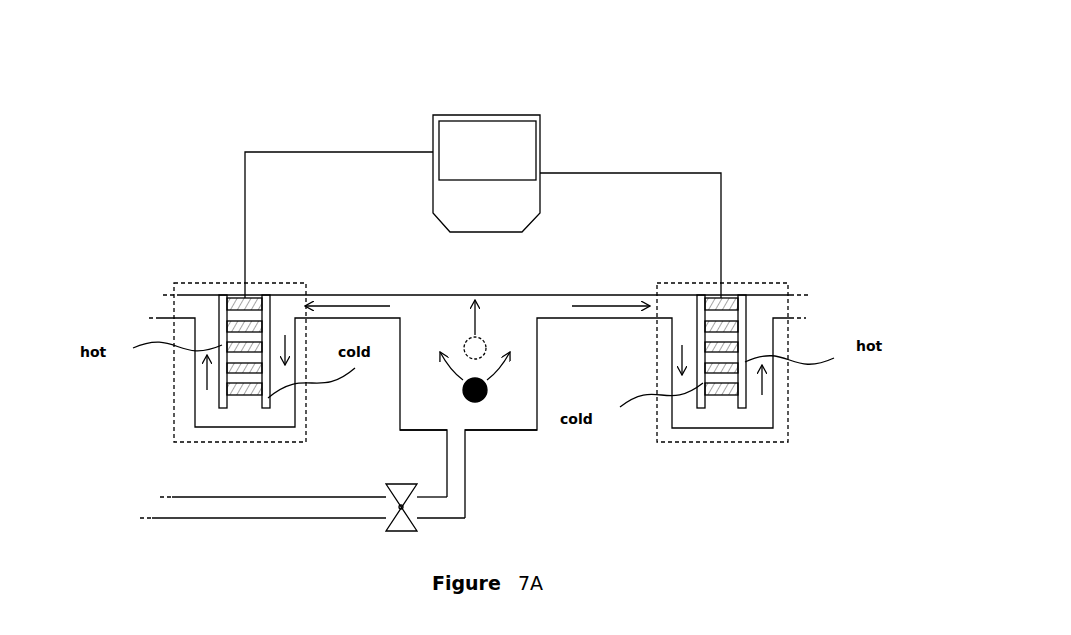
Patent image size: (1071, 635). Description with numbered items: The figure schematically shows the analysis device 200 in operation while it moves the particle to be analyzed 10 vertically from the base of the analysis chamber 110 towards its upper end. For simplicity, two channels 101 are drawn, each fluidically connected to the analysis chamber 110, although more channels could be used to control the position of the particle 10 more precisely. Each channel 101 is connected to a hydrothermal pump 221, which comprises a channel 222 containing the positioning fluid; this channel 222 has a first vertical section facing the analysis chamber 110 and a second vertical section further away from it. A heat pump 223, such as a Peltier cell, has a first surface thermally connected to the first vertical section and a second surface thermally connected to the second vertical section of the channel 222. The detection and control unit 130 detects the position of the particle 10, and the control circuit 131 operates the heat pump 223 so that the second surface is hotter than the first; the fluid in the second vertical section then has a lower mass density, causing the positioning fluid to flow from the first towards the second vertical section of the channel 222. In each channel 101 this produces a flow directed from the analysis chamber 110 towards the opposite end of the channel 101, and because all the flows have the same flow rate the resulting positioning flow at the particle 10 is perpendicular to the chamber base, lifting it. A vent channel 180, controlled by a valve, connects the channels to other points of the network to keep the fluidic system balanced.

The analysis device 200 is at (732, 37).
The channel 101 is at (325, 293).
The detection and control unit 130 is at (512, 112).
The control circuit 131 is at (533, 152).
The hydrothermal pump 221 is at (208, 275).
The channel 222 is at (202, 388).
The heat pump 223 is at (245, 400).
The particle to be analyzed 10 is at (490, 386).
The analysis chamber 110 is at (447, 430).
The vent channel 180 is at (333, 530).